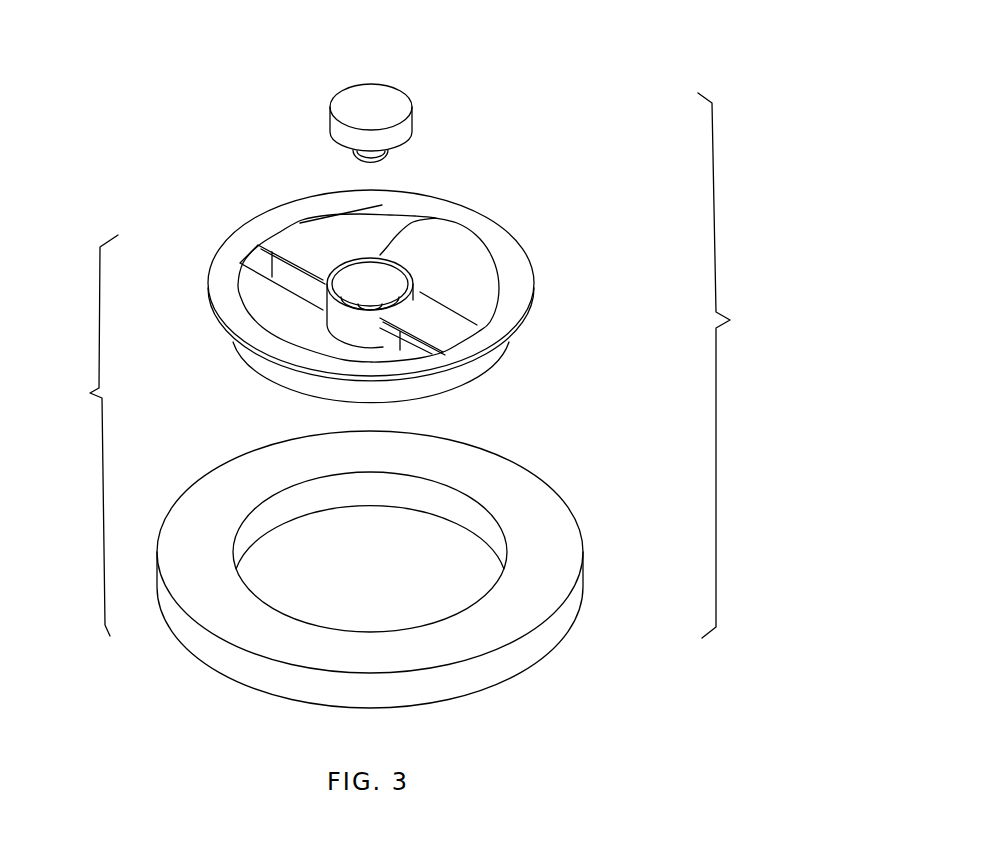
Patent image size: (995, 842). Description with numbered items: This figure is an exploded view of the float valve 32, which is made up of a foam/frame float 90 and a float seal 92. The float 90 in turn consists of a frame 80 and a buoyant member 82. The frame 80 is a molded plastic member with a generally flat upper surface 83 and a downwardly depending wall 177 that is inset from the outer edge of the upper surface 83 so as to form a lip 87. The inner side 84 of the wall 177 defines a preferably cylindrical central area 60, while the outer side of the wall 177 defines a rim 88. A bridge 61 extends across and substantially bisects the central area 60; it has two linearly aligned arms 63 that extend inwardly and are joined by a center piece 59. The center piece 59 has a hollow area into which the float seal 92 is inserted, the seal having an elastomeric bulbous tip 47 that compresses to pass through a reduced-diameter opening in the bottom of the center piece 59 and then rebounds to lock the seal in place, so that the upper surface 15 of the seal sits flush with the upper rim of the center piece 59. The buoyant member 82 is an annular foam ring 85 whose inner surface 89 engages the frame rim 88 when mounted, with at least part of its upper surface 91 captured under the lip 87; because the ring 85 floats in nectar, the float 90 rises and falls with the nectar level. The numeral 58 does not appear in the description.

The upper surface of the float seal 15 is at (350, 97).
The float seal 92 is at (385, 107).
The bulbous tip 47 is at (362, 167).
The upper surface 83 is at (287, 213).
The arms 63 is at (323, 252).
The center piece 59 is at (414, 257).
The inner side of the wall 84 is at (456, 296).
The bridge 61 is at (480, 259).
The frame 80 is at (387, 276).
The central area 60 is at (259, 286).
The lip 87 is at (536, 332).
The rim 88 is at (480, 360).
The wall 177 is at (233, 378).
The annular foam ring 85 is at (188, 475).
The inner surface of the ring 89 is at (471, 514).
The buoyant member 82 is at (402, 559).
The upper surface of the ring 91 is at (555, 569).
The gasket side wall 58 is at (188, 628).
The foam/frame float 90 is at (80, 435).
The float valve 32 is at (737, 365).